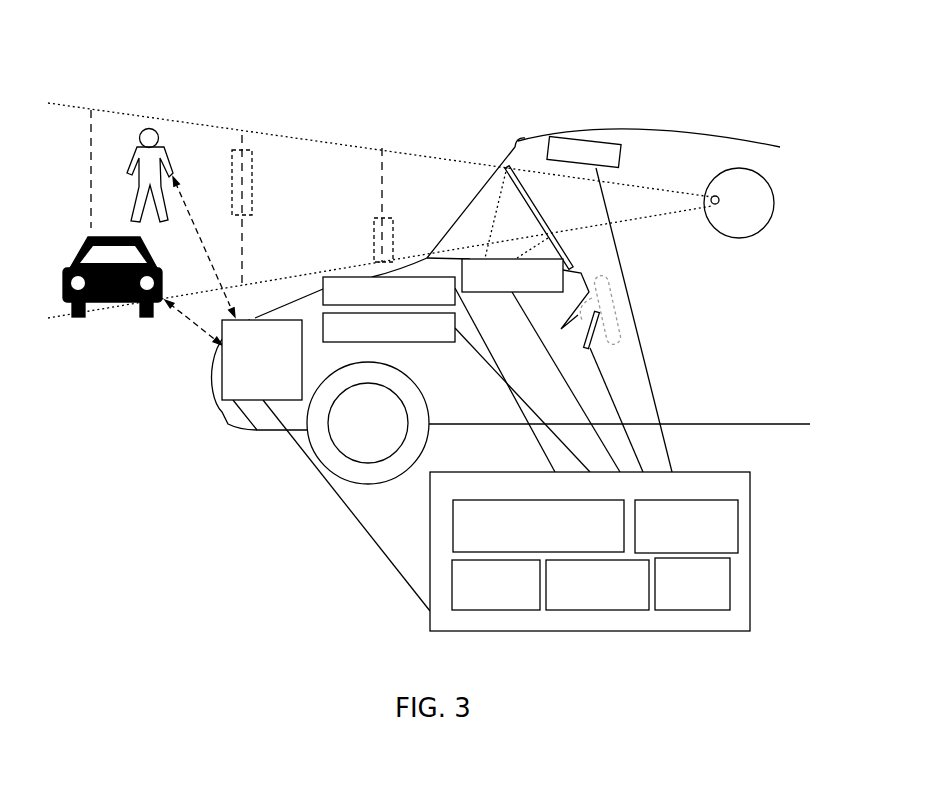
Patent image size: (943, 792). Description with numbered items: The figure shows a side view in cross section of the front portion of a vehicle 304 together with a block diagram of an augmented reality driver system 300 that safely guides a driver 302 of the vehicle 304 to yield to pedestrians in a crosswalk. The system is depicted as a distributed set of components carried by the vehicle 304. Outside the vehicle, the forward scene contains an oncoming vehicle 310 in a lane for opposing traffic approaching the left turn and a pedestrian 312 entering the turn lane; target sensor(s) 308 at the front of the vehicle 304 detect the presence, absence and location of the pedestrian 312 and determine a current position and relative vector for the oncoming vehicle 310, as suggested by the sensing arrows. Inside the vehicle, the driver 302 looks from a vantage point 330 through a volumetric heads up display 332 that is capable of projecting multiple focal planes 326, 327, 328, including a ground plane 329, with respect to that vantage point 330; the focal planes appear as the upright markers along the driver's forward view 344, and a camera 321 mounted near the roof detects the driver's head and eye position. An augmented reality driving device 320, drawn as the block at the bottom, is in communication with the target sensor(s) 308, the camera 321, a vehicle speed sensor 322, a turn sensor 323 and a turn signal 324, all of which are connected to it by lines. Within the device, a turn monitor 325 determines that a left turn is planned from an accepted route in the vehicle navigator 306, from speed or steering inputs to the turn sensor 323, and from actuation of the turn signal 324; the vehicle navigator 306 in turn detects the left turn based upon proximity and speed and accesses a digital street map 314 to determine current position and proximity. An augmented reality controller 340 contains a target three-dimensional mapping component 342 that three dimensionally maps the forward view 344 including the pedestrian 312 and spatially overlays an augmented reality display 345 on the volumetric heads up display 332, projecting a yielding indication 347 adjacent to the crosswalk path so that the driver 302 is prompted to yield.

The augmented reality driver system 300 is at (290, 497).
The driver 302 is at (747, 170).
The vehicle 304 is at (673, 128).
The vehicle navigator 306 is at (738, 527).
The target sensor(s) 308 is at (233, 400).
The oncoming vehicle 310 is at (141, 317).
The pedestrian 312 is at (162, 148).
The digital street map 314 is at (600, 610).
The augmented reality driving device 320 is at (718, 472).
The camera 321 is at (587, 140).
The vehicle speed sensor 322 is at (352, 277).
The turn sensor 323 is at (320, 311).
The turn signal 324 is at (598, 330).
The turn monitor 325 is at (731, 582).
The focal plane 326 is at (91, 142).
The focal plane 327 is at (242, 135).
The focal plane 328 is at (382, 162).
The ground plane 329 is at (525, 190).
The vantage point 330 is at (713, 196).
The volumetric heads up display 332 is at (568, 270).
The augmented reality controller 340 is at (452, 525).
The target 3D mapping component 342 is at (452, 586).
The forward view 344 is at (326, 141).
The augmented reality display 345 is at (374, 232).
The yielding indication 347 is at (252, 200).